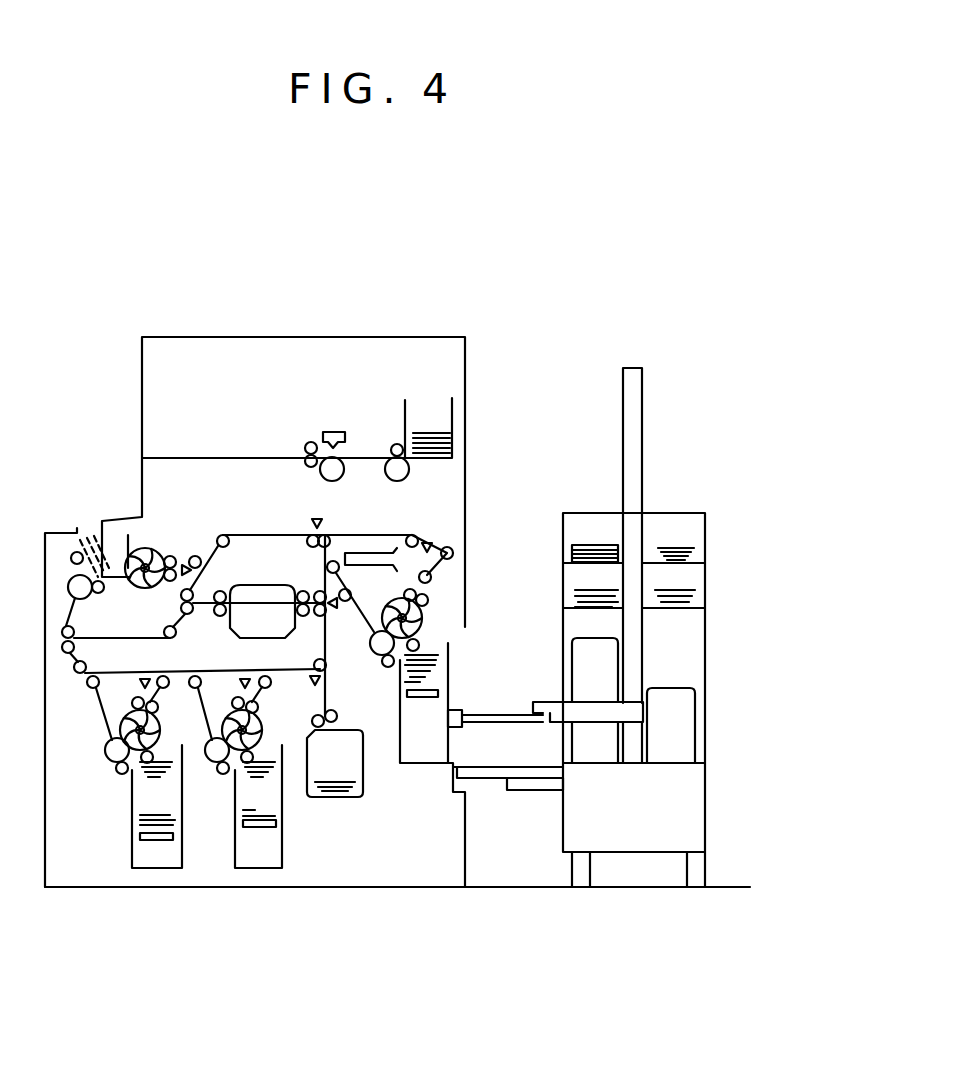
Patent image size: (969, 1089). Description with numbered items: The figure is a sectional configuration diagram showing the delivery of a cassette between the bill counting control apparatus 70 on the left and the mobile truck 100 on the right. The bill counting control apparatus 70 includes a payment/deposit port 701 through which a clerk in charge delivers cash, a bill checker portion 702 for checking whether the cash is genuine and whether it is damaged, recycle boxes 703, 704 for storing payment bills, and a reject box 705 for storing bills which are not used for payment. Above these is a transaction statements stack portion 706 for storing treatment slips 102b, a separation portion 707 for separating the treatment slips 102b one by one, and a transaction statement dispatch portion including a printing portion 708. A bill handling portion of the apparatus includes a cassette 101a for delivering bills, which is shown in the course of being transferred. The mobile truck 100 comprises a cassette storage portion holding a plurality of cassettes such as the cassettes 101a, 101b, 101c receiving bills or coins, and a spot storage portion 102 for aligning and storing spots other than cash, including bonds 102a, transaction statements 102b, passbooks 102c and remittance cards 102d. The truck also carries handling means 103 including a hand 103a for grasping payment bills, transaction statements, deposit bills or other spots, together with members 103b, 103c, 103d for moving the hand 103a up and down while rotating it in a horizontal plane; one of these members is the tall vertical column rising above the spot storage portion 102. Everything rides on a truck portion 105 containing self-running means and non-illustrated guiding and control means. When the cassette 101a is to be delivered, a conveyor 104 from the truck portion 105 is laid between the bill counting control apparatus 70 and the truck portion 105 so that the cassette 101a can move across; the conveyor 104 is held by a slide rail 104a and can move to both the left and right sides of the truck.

The bill counting control apparatus 70 is at (225, 338).
The payment/deposit port 701 is at (88, 530).
The bill checker portion 702 is at (265, 585).
The recycle box 703 is at (282, 857).
The recycle box 704 is at (132, 822).
The reject box 705 is at (367, 783).
The transaction statements stack portion 706 is at (415, 415).
The separation portion 707 is at (390, 446).
The printing portion 708 is at (322, 430).
The mobile truck 100 is at (705, 698).
The cassette 101a is at (397, 738).
The cassette 101b is at (585, 653).
The cassette 101c is at (675, 698).
The spot storage portion 102 is at (563, 540).
The bonds 102a is at (572, 590).
The transaction statements 102b is at (430, 440).
The passbooks 102c is at (595, 547).
The remittance cards 102d is at (680, 547).
The handling means 103 is at (527, 726).
The hand 103a is at (450, 710).
The member for moving the hand 103b is at (482, 712).
The member for moving the hand 103c is at (598, 717).
The member for moving the hand 103d is at (642, 376).
The conveyor 104 is at (482, 782).
The slide rail 104a is at (533, 793).
The truck portion 105 is at (690, 833).